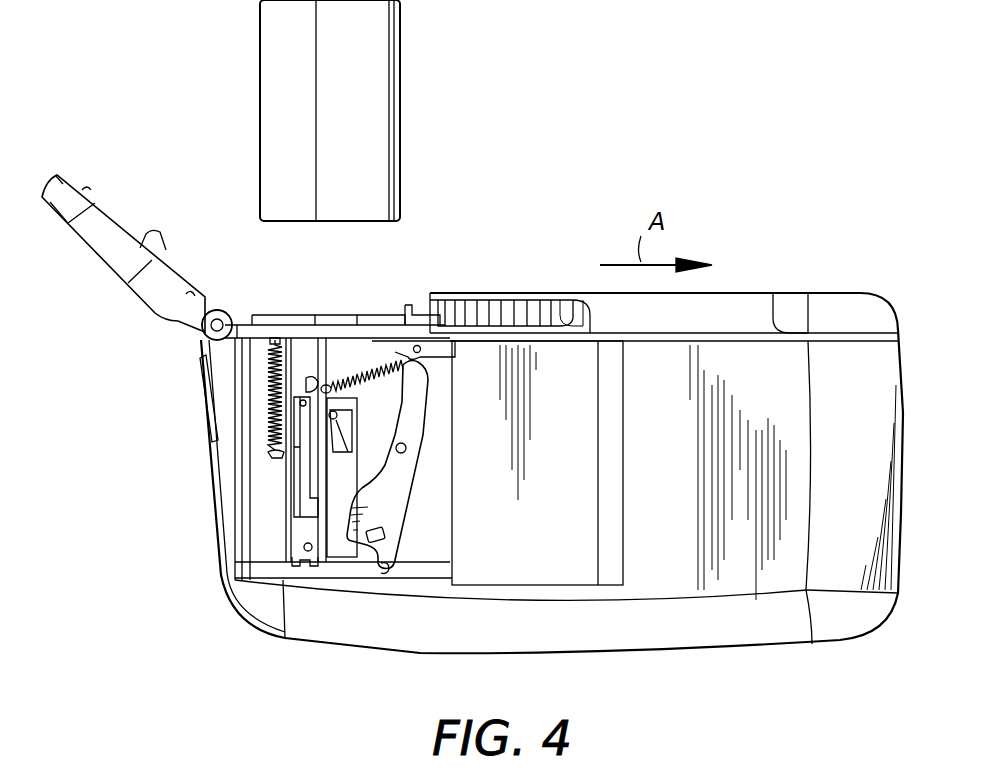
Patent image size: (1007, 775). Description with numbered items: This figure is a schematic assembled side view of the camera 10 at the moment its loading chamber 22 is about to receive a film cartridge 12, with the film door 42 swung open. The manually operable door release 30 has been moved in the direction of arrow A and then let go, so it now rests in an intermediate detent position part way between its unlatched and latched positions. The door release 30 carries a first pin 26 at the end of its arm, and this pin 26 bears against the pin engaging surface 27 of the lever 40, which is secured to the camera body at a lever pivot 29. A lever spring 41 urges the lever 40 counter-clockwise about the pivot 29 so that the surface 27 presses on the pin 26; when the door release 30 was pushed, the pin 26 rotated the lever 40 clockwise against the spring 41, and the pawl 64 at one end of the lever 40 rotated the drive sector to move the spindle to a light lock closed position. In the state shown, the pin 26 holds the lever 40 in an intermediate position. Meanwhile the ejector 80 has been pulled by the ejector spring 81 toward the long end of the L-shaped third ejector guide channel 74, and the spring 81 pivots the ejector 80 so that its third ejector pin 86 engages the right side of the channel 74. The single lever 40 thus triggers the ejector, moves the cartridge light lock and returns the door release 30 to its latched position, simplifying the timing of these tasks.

The housing 10 is at (738, 186).
The film cartridge 12 is at (272, 50).
The loading chamber 22 is at (252, 285).
The pin 26 is at (408, 360).
The pin engaging surface 27 is at (372, 364).
The lever pivot 29 is at (407, 453).
The door release 30 is at (486, 298).
The lever 40 is at (398, 506).
The lever spring 41 is at (360, 364).
The film door 42 is at (116, 252).
The pawl 64 is at (386, 576).
The third ejector guide channel 74 is at (300, 482).
The ejector 80 is at (296, 447).
The ejector spring 81 is at (270, 393).
The third ejector pin 86 is at (300, 395).